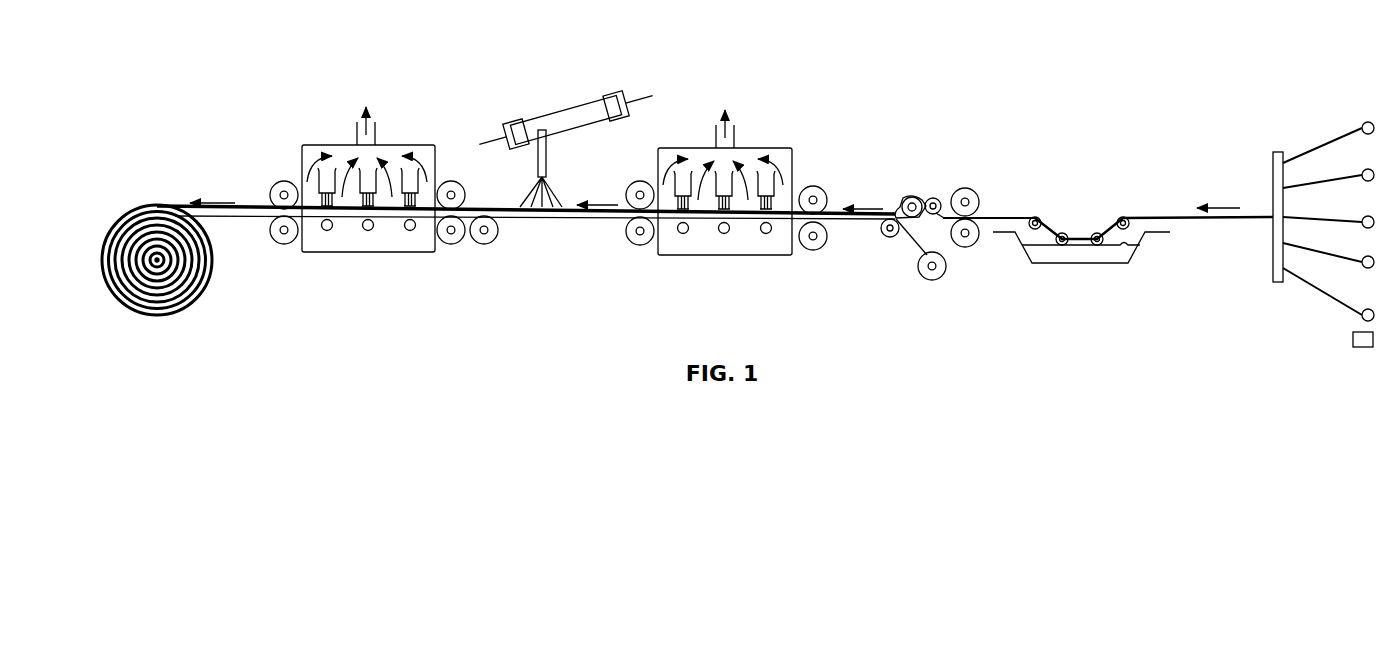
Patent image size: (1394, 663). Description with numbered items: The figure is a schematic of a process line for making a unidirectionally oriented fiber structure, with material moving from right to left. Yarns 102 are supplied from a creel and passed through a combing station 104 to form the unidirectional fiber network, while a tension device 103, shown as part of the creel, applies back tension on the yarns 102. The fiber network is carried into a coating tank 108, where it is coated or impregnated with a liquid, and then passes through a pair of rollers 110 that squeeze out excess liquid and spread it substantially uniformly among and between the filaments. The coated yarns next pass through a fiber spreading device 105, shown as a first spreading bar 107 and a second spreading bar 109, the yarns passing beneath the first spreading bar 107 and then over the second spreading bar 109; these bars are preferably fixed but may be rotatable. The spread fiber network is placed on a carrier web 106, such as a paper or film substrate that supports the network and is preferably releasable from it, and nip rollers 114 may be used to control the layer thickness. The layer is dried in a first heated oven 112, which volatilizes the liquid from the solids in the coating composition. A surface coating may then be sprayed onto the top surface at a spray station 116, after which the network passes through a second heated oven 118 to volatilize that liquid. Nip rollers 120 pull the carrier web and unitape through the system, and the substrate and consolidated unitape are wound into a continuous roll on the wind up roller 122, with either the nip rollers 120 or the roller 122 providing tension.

The yarns 102 is at (1352, 117).
The tension device 103 is at (1355, 347).
The combing station 104 is at (1270, 254).
The fiber spreading device 105 is at (935, 190).
The carrier web 106 is at (912, 248).
The first spreading bar 107 is at (926, 194).
The coating tank 108 is at (1086, 256).
The second spreading bar 109 is at (902, 196).
The pair of rollers 110 is at (983, 189).
The first heated oven 112 is at (771, 144).
The nip rollers 114 is at (806, 252).
The spray station 116 is at (538, 112).
The second heated oven 118 is at (330, 142).
The nip rollers 120 is at (279, 248).
The wind up roller 122 is at (151, 204).